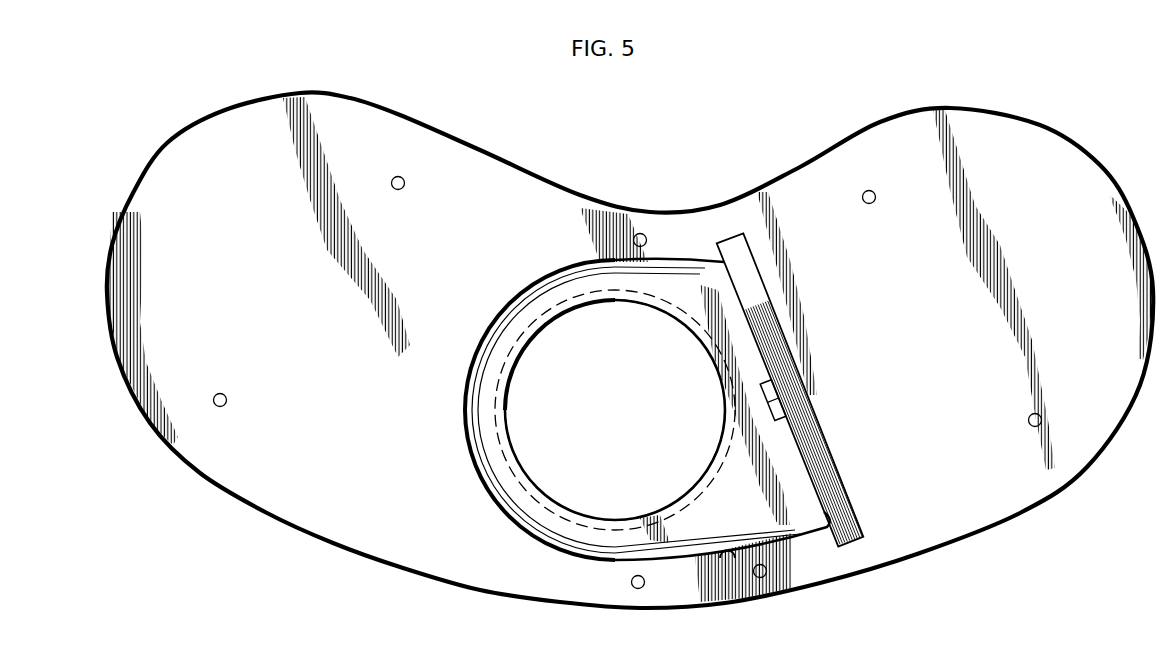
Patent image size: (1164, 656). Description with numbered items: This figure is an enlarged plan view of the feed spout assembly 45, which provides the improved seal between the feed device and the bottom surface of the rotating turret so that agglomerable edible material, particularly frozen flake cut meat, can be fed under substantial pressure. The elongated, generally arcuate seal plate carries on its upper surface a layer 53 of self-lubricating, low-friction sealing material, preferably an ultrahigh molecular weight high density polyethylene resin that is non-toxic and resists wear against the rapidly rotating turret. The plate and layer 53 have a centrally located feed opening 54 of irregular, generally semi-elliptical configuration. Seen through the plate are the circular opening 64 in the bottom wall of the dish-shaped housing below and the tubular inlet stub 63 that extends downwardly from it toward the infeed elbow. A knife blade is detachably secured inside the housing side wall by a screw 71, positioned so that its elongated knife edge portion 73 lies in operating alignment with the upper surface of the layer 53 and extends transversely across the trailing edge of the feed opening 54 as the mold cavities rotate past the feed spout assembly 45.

The feed spout assembly 45 is at (1023, 513).
The layer of self-lubricating sealing material 53 is at (942, 339).
The feed opening 54 is at (733, 557).
The tubular inlet stub 63 is at (522, 478).
The circular opening 64 is at (710, 363).
The screw 71 is at (773, 421).
The knife edge portion 73 is at (838, 493).